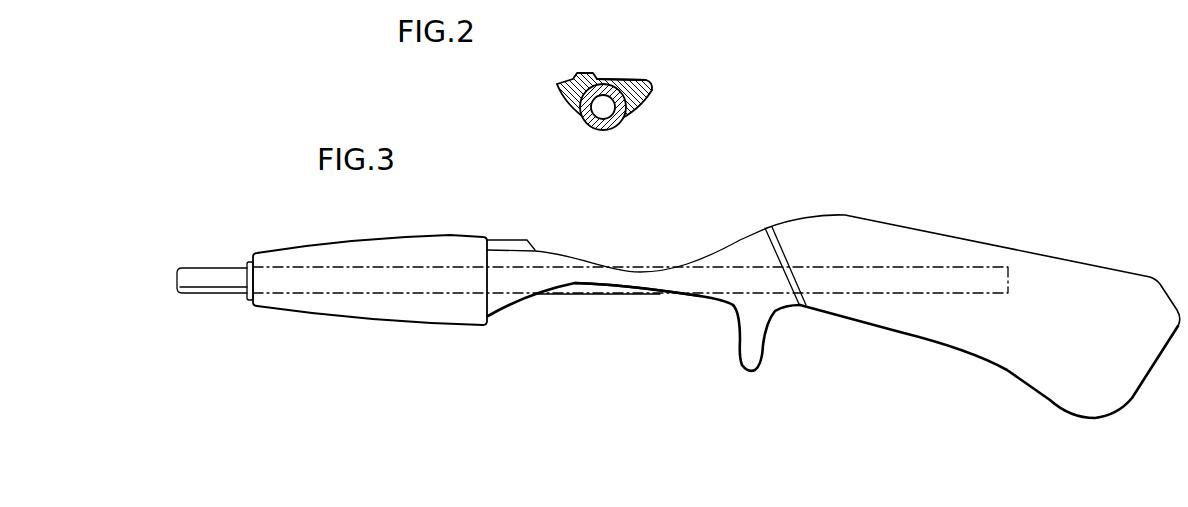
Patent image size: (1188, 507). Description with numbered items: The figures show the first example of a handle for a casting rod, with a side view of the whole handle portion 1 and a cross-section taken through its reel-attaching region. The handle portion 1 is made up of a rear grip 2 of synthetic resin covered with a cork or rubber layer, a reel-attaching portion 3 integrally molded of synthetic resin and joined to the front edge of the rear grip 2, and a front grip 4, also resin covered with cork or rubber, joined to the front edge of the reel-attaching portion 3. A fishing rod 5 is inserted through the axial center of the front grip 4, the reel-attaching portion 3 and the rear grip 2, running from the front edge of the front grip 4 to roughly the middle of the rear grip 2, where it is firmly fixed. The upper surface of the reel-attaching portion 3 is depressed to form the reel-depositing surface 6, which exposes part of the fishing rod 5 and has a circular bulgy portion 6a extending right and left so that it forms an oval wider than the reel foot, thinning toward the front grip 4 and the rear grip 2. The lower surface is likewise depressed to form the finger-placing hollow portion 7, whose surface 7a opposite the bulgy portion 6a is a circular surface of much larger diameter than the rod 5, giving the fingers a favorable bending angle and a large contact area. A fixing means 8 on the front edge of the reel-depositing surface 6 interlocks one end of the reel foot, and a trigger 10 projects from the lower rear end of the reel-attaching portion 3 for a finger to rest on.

In FIG. 3, the handle portion 1 is at (678, 299).
In FIG. 3, the rear grip 2 is at (1057, 256).
In FIG. 2, the reel-attaching portion 3 is at (607, 97).
In FIG. 3, the reel-attaching portion 3 is at (646, 296).
In FIG. 3, the front grip 4 is at (355, 240).
In FIG. 2, the fishing rod 5 is at (582, 123).
In FIG. 3, the fishing rod 5 is at (569, 295).
In FIG. 2, the reel-depositing surface 6 is at (618, 82).
In FIG. 3, the reel-depositing surface 6 is at (565, 252).
In FIG. 2, the bulgy portion 6a is at (557, 84).
In FIG. 3, the bulgy portion 6a is at (622, 282).
In FIG. 3, the finger-placing hollow portion 7 is at (546, 299).
In FIG. 2, the finger-placing surface 7a is at (560, 102).
In FIG. 3, the fixing means 8 is at (508, 239).
In FIG. 3, the trigger 10 is at (762, 357).